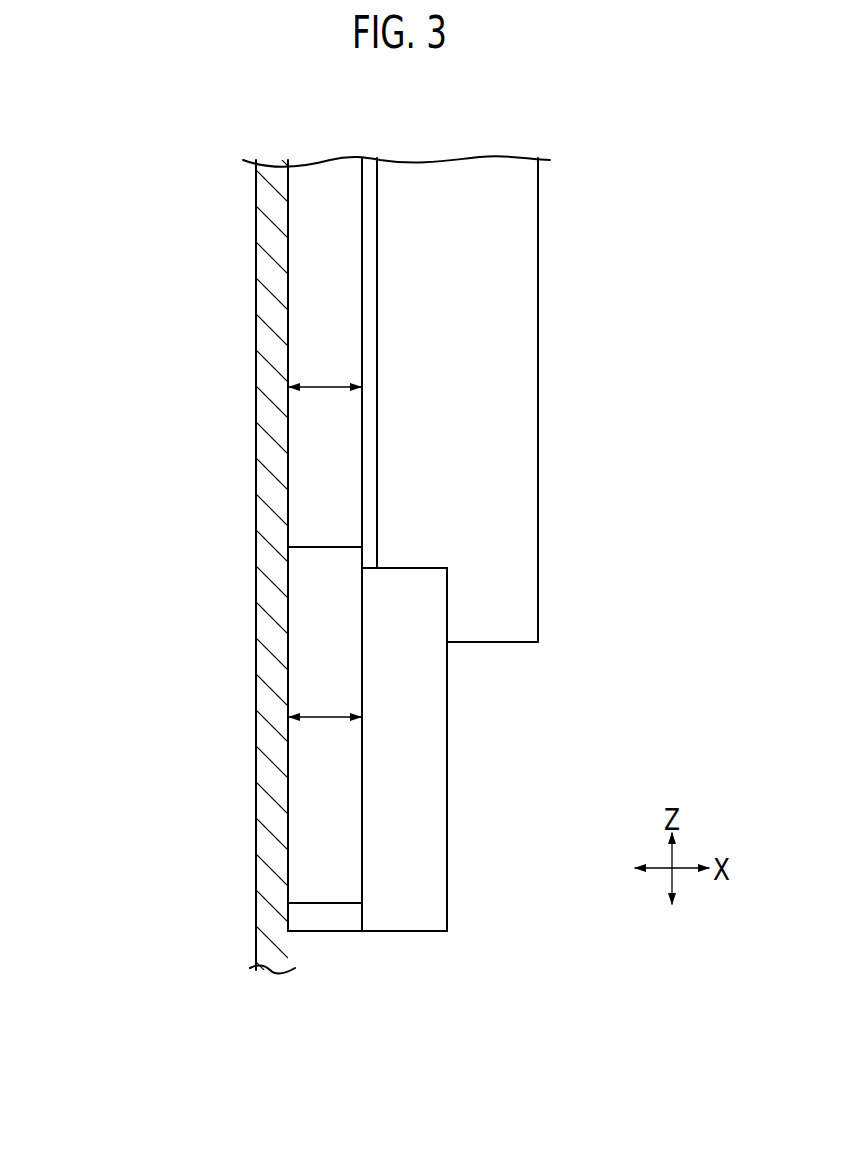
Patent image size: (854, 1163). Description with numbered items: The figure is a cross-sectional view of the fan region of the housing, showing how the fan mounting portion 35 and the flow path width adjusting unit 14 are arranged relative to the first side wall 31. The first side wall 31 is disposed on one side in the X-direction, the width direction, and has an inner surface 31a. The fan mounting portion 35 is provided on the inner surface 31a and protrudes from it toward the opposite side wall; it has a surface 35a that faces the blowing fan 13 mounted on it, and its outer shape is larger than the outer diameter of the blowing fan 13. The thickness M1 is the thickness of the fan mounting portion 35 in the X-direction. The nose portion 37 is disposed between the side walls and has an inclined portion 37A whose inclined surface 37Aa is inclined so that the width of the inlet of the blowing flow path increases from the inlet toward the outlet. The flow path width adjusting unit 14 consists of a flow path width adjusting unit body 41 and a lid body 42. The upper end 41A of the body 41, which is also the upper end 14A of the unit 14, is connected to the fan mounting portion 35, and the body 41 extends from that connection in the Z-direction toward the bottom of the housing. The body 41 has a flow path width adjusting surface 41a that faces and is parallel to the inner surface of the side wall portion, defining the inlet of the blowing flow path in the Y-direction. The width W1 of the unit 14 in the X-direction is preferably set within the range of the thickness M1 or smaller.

The blowing fan 13 is at (508, 365).
The flow path width adjusting unit 14 is at (118, 835).
The upper end of the flow path width adjusting unit 14A is at (97, 647).
The first side wall 31 is at (272, 548).
The inner surface 31a is at (290, 475).
The fan mounting portion 35 is at (325, 230).
The surface 35a is at (362, 262).
The nose portion 37 is at (452, 797).
The inclined portion 37A is at (425, 692).
The inclined surface 37Aa is at (427, 743).
The flow path width adjusting unit body 41 is at (305, 834).
The upper end of the flow path width adjusting unit body 41A is at (318, 558).
The flow path width adjusting surface 41a is at (318, 779).
The lid body 42 is at (302, 916).
The thickness M1 is at (330, 385).
The width W1 is at (330, 715).